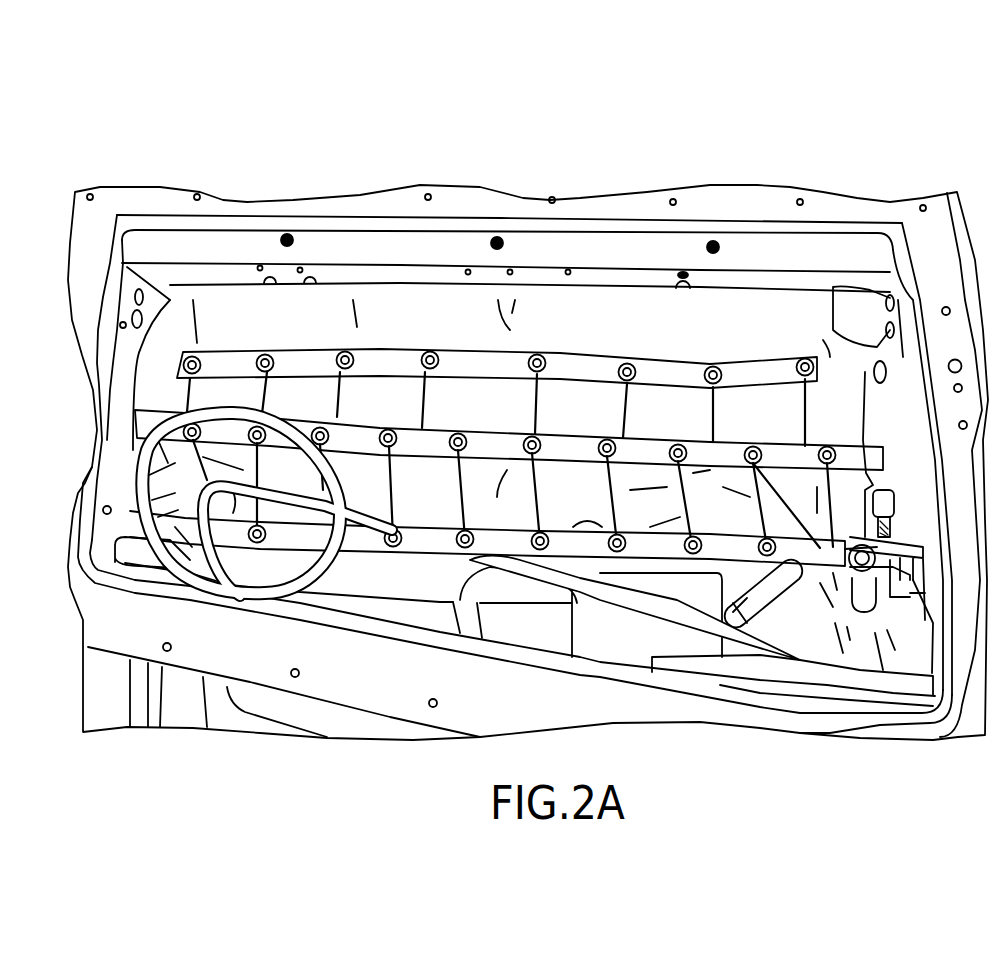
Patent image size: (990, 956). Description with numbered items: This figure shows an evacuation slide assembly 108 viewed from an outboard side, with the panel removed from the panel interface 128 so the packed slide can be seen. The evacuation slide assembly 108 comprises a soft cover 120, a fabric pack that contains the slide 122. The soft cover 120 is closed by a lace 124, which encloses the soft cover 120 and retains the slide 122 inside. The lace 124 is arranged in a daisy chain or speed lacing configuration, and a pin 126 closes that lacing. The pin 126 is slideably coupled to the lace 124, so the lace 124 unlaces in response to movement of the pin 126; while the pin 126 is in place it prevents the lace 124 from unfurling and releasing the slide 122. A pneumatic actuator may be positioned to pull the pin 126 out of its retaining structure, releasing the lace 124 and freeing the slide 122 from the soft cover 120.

The evacuation slide assembly 108 is at (122, 153).
The soft cover 120 is at (390, 304).
The slide 122 is at (755, 375).
The lace 124 is at (541, 470).
The pin 126 is at (712, 483).
The panel interface 128 is at (207, 246).